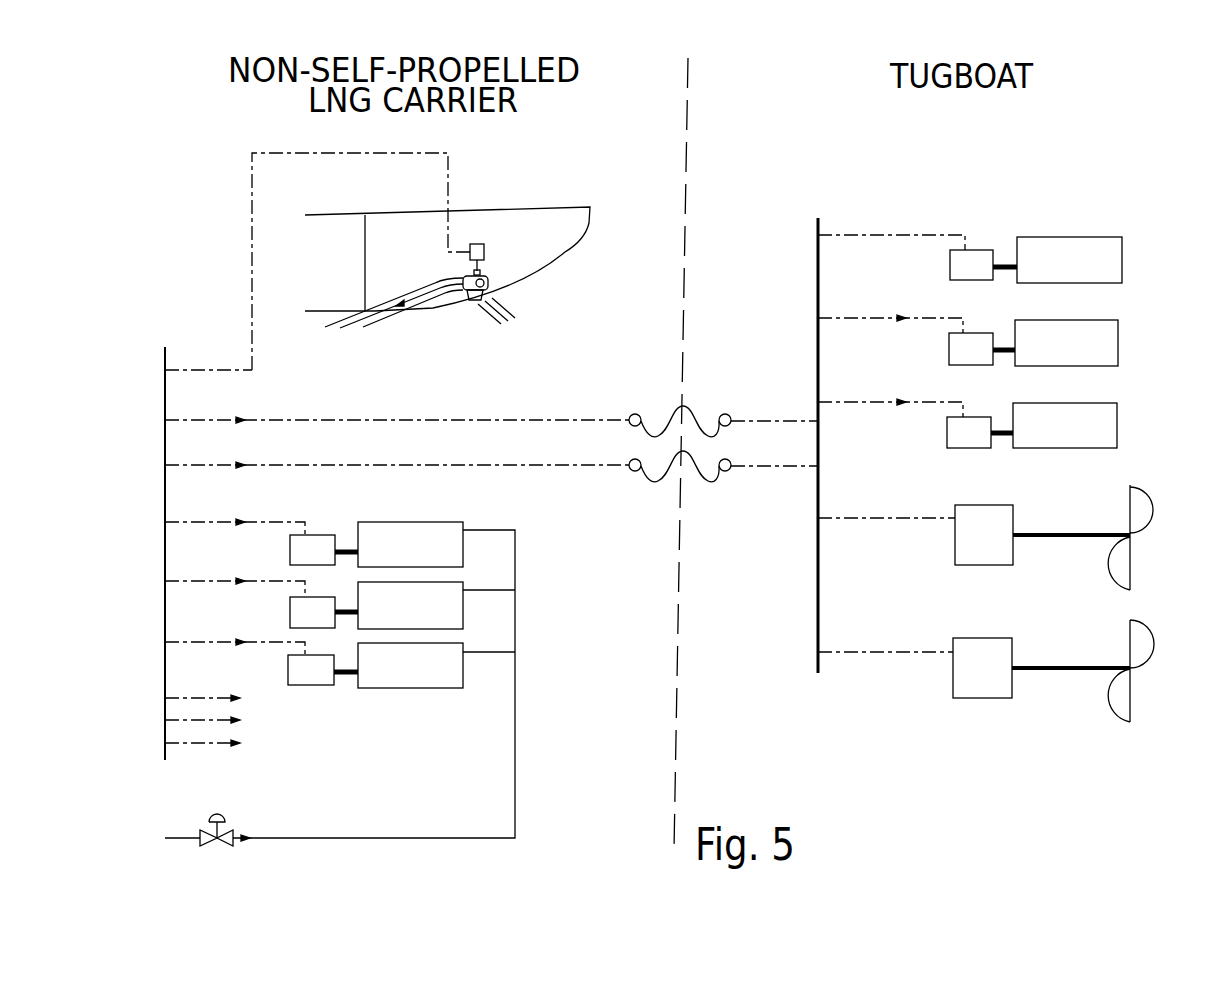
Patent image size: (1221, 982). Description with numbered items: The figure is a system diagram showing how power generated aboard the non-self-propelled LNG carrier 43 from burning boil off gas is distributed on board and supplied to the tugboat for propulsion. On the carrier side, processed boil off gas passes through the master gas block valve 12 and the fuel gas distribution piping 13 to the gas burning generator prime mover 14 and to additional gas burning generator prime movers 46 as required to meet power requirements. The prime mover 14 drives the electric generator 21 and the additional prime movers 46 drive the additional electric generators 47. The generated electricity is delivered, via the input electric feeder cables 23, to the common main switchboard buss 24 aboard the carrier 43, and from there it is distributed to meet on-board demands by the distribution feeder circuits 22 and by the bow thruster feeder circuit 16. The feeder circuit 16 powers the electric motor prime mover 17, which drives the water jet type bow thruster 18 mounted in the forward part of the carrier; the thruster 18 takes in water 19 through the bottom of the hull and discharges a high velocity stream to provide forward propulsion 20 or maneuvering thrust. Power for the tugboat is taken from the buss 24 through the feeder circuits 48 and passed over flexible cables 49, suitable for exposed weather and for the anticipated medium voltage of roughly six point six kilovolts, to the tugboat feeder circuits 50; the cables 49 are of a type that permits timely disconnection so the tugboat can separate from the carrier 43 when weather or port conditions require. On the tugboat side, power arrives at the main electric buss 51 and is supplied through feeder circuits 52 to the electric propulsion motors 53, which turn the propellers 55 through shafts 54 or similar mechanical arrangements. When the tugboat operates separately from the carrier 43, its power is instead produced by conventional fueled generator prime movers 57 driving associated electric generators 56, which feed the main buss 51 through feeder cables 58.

The master gas block valve 12 is at (225, 827).
The fuel gas distribution piping 13 is at (515, 708).
The gas burning generator prime mover 14 is at (398, 688).
The bow thruster feeder circuit 16 is at (418, 157).
The electric motor prime mover 17 is at (480, 244).
The water jet type bow thruster 18 is at (490, 285).
The water 19 is at (517, 330).
The forward propulsion 20 is at (363, 338).
The electric generator 21 is at (313, 688).
The distribution feeder circuits 22 is at (243, 705).
The input electric feeder cables 23 is at (252, 645).
The main switchboard buss 24 is at (165, 572).
The non-self-propelled LNG carrier 43 is at (527, 229).
The additional gas burning generator prime movers 46 is at (447, 607).
The additional electric generators 47 is at (320, 610).
The feeder circuits 48 is at (393, 418).
The flexible cables 49 is at (679, 454).
The tugboat feeder circuits 50 is at (780, 467).
The main electric buss 51 is at (818, 608).
The feeder circuits 52 is at (867, 518).
The electric propulsion motors 53 is at (985, 537).
The shafts 54 is at (1052, 543).
The propellers 55 is at (1135, 650).
The electric generators 56 is at (977, 432).
The conventional fueled generator prime movers 57 is at (1050, 425).
The feeder cables 58 is at (882, 402).